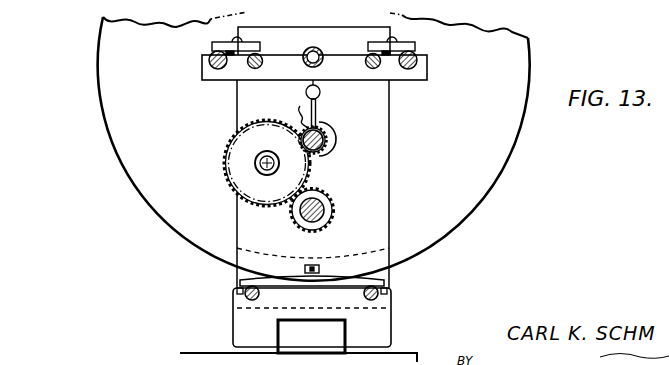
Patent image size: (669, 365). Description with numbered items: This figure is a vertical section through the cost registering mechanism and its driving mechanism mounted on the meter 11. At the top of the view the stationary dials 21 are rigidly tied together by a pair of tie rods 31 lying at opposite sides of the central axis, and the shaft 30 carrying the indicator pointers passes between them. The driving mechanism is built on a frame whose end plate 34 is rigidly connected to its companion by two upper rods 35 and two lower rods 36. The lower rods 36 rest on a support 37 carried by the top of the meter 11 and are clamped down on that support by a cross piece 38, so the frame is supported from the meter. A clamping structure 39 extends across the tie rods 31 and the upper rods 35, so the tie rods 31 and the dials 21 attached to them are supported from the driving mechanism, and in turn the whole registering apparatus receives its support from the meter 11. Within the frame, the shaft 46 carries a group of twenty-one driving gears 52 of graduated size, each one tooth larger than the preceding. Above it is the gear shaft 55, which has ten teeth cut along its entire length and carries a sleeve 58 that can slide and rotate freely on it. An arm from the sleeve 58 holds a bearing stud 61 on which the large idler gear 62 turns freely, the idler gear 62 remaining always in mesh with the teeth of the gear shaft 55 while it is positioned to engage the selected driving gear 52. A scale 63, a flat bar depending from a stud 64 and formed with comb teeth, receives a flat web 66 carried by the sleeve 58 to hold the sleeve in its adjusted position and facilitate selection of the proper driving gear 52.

The meter 11 is at (184, 356).
The dials 21 is at (96, 66).
The shaft 30 is at (340, 20).
The tie rods 31 is at (202, 65).
The end plate 34 is at (391, 195).
The upper rods 35 is at (253, 72).
The lower rods 36 is at (246, 294).
The support 37 is at (380, 333).
The cross piece 38 is at (255, 273).
The clamping structure 39 is at (207, 43).
The shaft 46 is at (324, 208).
The driving gears 52 is at (327, 196).
The gear shaft 55 is at (330, 139).
The sleeve 58 is at (325, 128).
The bearing stud 61 is at (285, 142).
The idler gear 62 is at (234, 153).
The scale 63 is at (318, 101).
The stud 64 is at (320, 87).
The web 66 is at (300, 106).